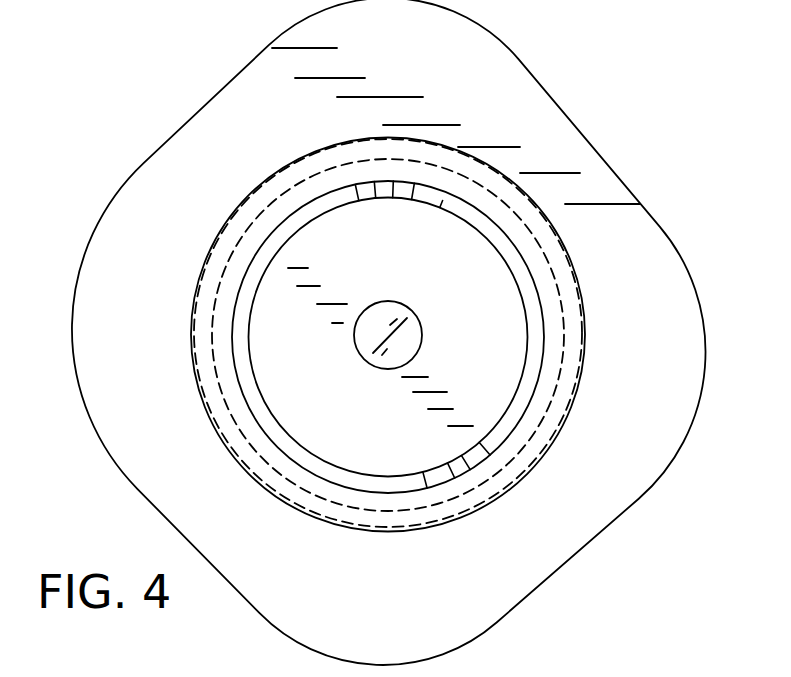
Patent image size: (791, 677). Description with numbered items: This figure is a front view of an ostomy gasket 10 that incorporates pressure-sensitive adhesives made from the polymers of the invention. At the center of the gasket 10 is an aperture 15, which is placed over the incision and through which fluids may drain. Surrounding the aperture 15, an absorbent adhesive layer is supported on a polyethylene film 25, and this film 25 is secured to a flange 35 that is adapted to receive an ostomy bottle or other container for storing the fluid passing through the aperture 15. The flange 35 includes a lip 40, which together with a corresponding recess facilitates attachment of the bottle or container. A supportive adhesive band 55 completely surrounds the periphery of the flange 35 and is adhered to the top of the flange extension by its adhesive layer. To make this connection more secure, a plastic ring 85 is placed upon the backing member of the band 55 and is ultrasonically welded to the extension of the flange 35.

The ostomy gasket 10 is at (148, 113).
The supportive adhesive band 55 is at (157, 268).
The plastic ring 85 is at (567, 356).
The flange 35 is at (527, 380).
The lip 40 is at (300, 445).
The polyethylene film 25 is at (407, 259).
The aperture 15 is at (413, 312).